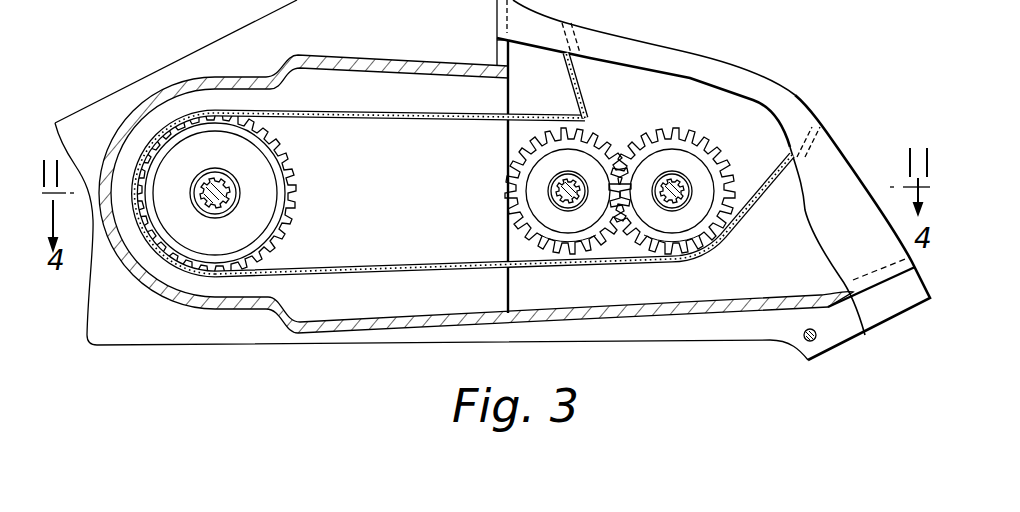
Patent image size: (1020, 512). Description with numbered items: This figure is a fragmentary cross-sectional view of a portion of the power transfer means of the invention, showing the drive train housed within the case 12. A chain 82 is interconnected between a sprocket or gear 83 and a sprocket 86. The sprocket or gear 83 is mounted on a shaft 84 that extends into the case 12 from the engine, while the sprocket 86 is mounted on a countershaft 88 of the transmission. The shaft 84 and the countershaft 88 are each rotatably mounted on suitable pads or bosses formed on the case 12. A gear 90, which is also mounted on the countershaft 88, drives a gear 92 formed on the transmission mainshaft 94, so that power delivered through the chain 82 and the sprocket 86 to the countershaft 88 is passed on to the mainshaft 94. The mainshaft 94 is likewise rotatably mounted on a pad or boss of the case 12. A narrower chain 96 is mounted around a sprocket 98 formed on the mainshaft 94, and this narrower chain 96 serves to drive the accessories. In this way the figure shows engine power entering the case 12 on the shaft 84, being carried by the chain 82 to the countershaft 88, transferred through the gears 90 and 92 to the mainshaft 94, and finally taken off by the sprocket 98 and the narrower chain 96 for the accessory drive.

The case 12 is at (280, 313).
The chain 82 is at (391, 113).
The sprocket or gear 83 is at (294, 168).
The shaft 84 is at (230, 202).
The sprocket 86 is at (505, 163).
The countershaft 88 is at (552, 197).
The gear 90 is at (579, 245).
The gear 92 is at (672, 248).
The transmission mainshaft 94 is at (662, 170).
The narrower chain 96 is at (585, 82).
The sprocket 98 is at (740, 148).